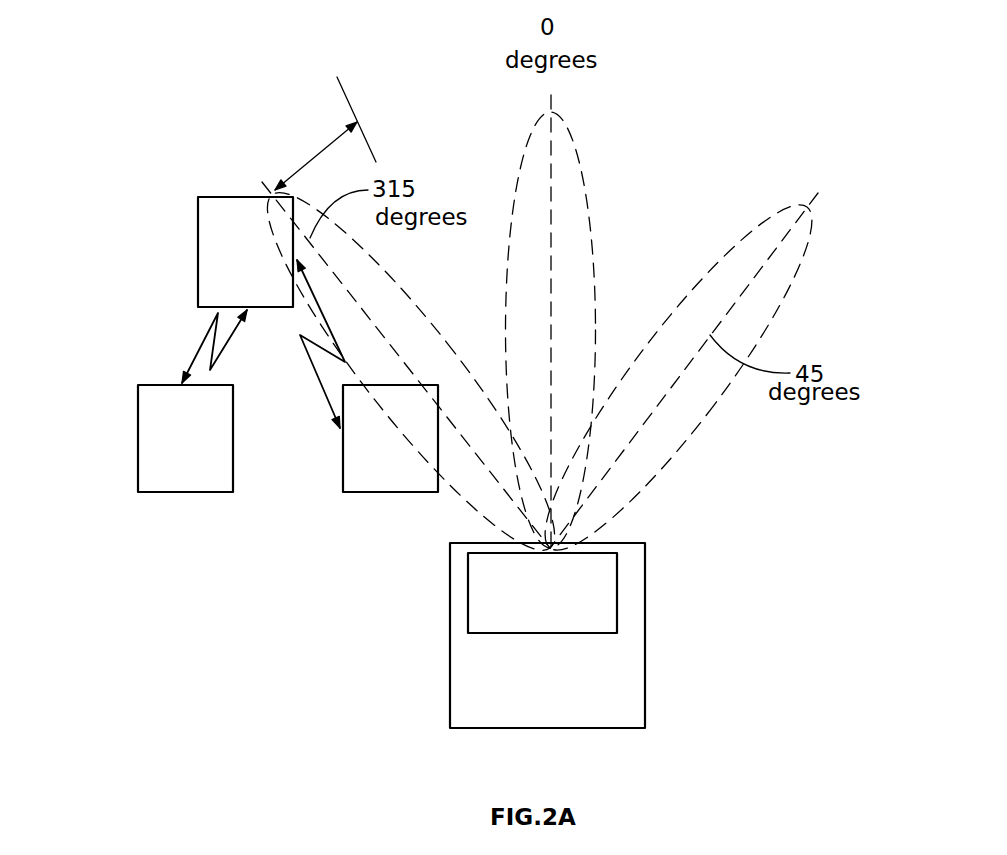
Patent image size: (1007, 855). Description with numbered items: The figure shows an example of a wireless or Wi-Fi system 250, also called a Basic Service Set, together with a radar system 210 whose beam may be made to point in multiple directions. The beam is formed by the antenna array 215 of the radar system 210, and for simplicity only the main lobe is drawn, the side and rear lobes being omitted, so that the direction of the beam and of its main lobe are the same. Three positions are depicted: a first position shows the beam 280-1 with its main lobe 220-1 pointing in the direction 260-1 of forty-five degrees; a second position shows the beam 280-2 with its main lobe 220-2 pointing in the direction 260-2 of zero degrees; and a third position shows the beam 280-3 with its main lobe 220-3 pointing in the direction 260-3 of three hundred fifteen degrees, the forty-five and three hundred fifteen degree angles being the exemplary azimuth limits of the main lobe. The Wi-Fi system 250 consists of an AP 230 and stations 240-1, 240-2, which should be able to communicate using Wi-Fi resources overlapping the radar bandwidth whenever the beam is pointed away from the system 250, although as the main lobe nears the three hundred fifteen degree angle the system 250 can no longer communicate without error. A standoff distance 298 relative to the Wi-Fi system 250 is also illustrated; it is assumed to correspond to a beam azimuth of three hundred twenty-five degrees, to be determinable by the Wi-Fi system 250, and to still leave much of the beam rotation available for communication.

The radar system 210 is at (450, 680).
The antenna array 215 is at (468, 597).
The main lobe 220-1 is at (810, 235).
The main lobe 220-2 is at (584, 185).
The main lobe 220-3 is at (395, 278).
The AP 230 is at (198, 270).
The station (STA) 240-1 is at (367, 493).
The station (STA) 240-2 is at (160, 493).
The wireless system (Wi-Fi system) 250 is at (138, 203).
The direction 260-1 is at (775, 247).
The direction 260-2 is at (552, 277).
The direction 260-3 is at (403, 360).
The beam 280-1 is at (852, 148).
The beam 280-2 is at (570, 103).
The beam 280-3 is at (257, 163).
The standoff distance 298 is at (316, 158).